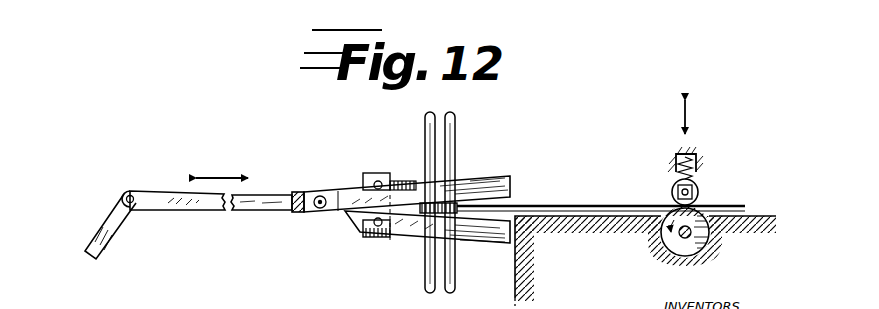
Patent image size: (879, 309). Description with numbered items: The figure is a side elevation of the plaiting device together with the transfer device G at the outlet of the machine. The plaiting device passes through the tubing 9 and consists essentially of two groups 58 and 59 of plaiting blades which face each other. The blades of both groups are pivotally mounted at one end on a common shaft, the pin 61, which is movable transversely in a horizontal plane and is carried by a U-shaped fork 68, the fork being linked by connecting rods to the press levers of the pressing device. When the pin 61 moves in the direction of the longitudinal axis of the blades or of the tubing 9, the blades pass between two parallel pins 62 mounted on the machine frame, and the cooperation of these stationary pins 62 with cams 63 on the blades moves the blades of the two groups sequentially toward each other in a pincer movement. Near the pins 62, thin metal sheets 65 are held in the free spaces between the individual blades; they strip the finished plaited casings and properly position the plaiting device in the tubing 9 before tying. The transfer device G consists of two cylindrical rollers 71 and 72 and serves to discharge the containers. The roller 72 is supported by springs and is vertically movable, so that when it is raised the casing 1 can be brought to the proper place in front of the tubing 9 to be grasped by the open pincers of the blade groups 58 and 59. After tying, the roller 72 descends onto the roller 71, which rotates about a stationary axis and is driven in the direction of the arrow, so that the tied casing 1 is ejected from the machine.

The casing 1 is at (548, 207).
The tubing 9 is at (452, 131).
The group of plaiting blades 58 is at (498, 178).
The group of plaiting blades 59 is at (492, 242).
The pin 61 is at (320, 196).
The pins 62 is at (377, 181).
The cams 63 is at (411, 181).
The thin metal sheets 65 is at (362, 226).
The U-shaped fork 68 is at (292, 212).
The roller 71 is at (670, 250).
The roller 72 is at (671, 193).
The transfer device G is at (712, 194).